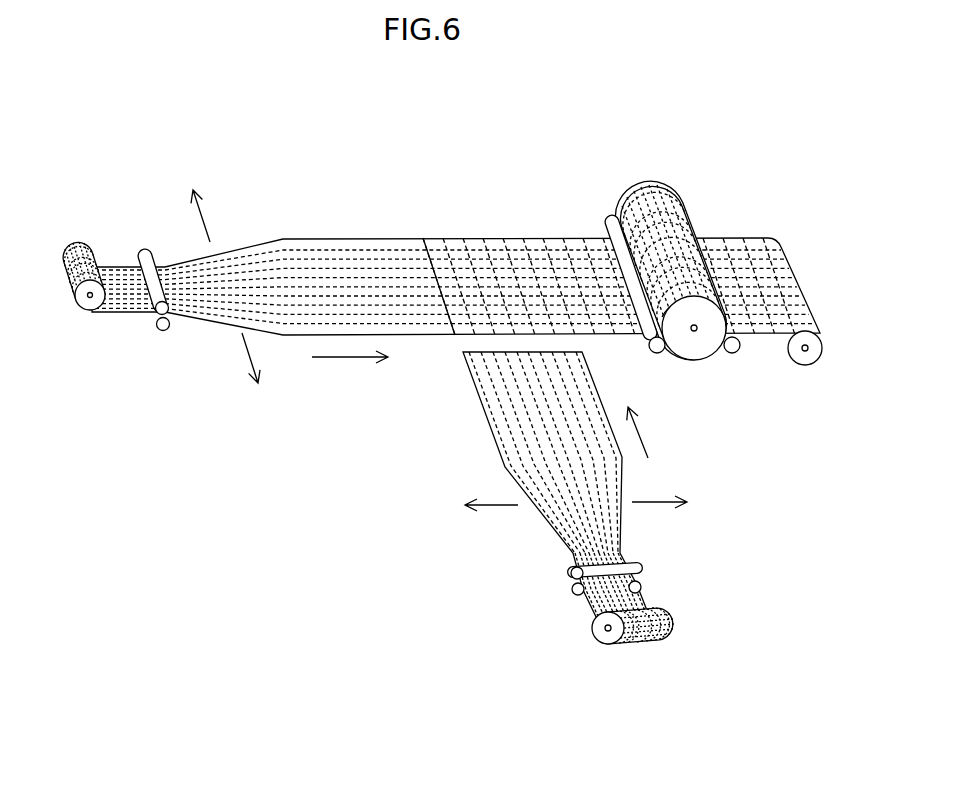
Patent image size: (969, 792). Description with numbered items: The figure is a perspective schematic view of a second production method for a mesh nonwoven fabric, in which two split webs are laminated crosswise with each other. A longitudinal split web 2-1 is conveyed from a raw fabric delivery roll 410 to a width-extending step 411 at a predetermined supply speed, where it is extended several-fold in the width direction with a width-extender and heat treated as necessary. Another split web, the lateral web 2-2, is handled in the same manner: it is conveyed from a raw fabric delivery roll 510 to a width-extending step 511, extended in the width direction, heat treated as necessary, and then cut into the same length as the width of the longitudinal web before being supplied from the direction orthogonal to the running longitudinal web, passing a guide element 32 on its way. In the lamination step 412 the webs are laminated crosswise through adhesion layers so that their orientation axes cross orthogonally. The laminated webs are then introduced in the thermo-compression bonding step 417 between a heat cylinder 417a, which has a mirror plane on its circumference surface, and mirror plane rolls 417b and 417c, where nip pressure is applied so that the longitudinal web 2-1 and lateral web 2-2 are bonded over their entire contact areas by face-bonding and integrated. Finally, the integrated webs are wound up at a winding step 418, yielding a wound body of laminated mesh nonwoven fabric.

The split web (longitudinal web) 2-1 is at (120, 265).
The raw fabric delivery roll 410 is at (85, 305).
The width-extending step 411 is at (200, 290).
The lamination step 412 is at (467, 238).
The thermo-compression bonding step 417 is at (672, 264).
The heat cylinder 417a is at (697, 350).
The mirror plane roll 417b is at (605, 222).
The mirror plane roll 417c is at (697, 227).
The winding step 418 is at (802, 365).
The width-extending step 511 is at (547, 520).
The guide bar 32 is at (575, 590).
The split web (lateral web) 2-2 is at (597, 612).
The raw fabric delivery roll 510 is at (598, 642).